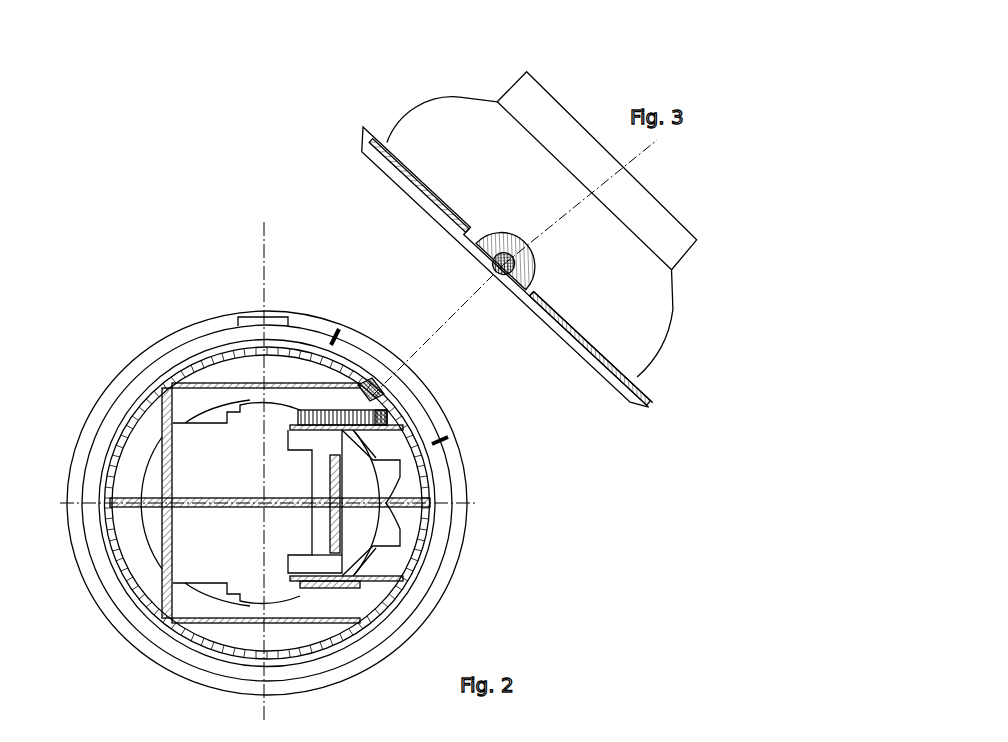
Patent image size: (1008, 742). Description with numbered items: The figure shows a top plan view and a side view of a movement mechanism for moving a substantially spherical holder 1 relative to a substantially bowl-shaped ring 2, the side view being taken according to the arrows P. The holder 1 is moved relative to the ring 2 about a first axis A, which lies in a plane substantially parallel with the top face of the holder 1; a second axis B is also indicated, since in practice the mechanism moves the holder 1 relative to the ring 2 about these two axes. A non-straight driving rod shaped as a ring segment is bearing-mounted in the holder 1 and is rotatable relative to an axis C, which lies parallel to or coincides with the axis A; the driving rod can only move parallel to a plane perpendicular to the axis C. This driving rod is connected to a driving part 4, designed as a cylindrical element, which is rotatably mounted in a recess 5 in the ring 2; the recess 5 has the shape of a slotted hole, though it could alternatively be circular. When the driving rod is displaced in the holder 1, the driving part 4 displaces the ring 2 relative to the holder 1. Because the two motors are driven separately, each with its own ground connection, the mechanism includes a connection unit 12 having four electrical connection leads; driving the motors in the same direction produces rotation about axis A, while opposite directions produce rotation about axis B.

In FIG. 2, the holder 1 is at (183, 400).
In FIG. 3, the holder 1 is at (560, 204).
In FIG. 2, the ring 2 is at (171, 329).
In FIG. 3, the ring 2 is at (525, 252).
In FIG. 2, the driving part 4 is at (385, 396).
In FIG. 3, the driving part 4 is at (500, 294).
In FIG. 3, the recess 5 is at (490, 272).
In FIG. 2, the connection unit 12 is at (270, 311).
In FIG. 2, the arrows P is at (341, 333).
In FIG. 2, the first axis A is at (264, 707).
In FIG. 2, the second axis B is at (58, 498).
In FIG. 2, the axis C is at (264, 267).